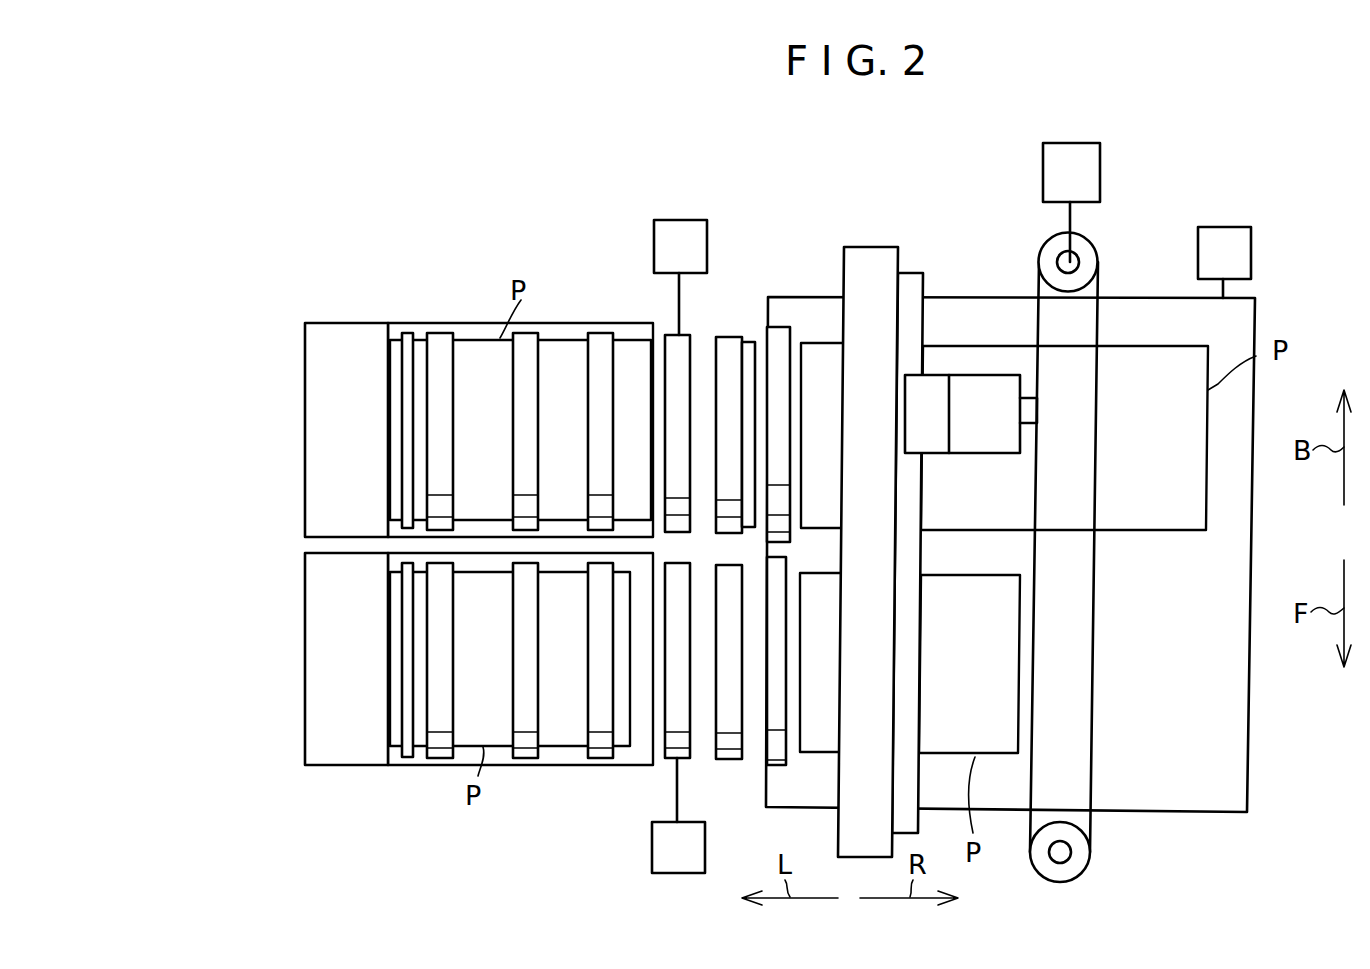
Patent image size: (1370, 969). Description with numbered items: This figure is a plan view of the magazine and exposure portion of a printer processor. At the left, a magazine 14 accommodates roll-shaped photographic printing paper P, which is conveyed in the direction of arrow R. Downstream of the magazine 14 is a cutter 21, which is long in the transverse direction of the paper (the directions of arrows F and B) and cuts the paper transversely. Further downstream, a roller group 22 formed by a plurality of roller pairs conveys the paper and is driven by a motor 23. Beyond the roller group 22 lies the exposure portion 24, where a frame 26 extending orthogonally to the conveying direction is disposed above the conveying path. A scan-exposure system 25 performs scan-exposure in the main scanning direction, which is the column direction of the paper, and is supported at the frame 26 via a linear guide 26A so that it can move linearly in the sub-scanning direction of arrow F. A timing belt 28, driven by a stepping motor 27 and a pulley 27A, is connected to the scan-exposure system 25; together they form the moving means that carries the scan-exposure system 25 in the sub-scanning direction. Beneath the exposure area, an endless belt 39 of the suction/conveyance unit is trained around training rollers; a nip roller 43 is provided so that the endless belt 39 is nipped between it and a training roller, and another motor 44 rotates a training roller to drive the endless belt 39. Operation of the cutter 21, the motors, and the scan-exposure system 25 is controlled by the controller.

The magazine 14 is at (305, 388).
The cutter 21 is at (412, 332).
The roller group 22 is at (445, 332).
The motor 23 is at (690, 218).
The exposure portion 24 is at (886, 212).
The scan-exposure system 25 is at (985, 373).
The frame 26 is at (848, 247).
The linear guide 26A is at (933, 373).
The stepping motor 27 is at (1100, 170).
The pulley 27A is at (1093, 256).
The timing belt 28 is at (1098, 327).
The endless belt 39 is at (1225, 573).
The nip roller 43 is at (787, 323).
The motor 44 is at (1251, 263).